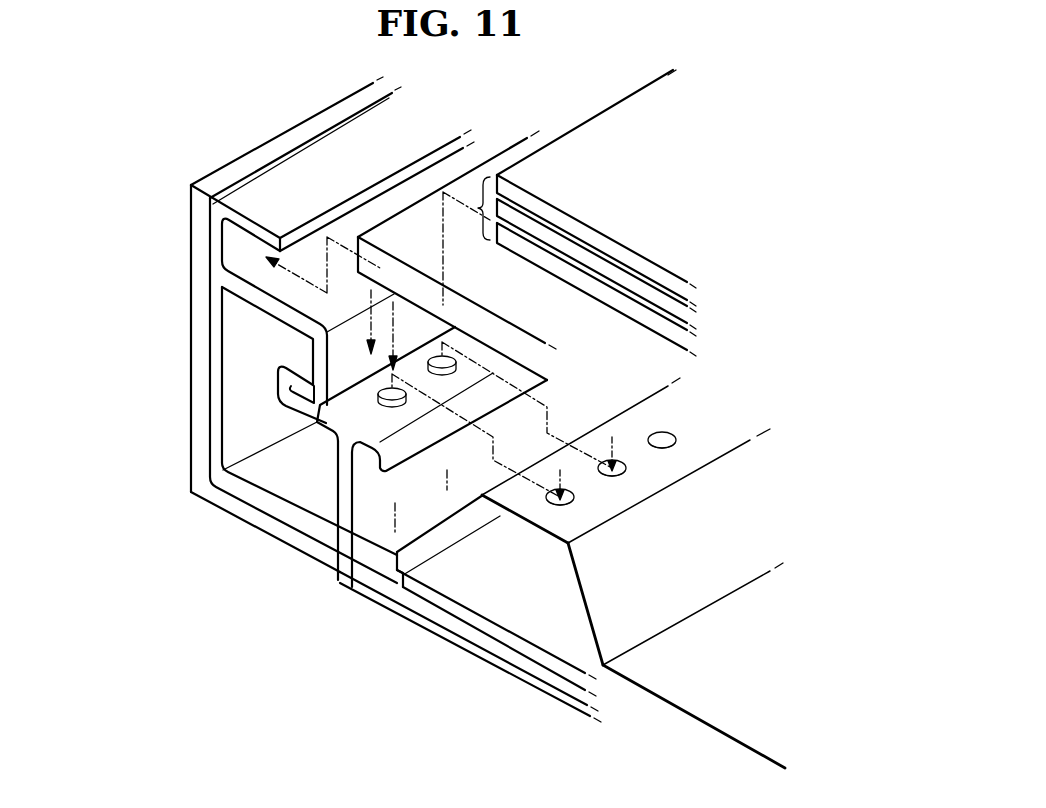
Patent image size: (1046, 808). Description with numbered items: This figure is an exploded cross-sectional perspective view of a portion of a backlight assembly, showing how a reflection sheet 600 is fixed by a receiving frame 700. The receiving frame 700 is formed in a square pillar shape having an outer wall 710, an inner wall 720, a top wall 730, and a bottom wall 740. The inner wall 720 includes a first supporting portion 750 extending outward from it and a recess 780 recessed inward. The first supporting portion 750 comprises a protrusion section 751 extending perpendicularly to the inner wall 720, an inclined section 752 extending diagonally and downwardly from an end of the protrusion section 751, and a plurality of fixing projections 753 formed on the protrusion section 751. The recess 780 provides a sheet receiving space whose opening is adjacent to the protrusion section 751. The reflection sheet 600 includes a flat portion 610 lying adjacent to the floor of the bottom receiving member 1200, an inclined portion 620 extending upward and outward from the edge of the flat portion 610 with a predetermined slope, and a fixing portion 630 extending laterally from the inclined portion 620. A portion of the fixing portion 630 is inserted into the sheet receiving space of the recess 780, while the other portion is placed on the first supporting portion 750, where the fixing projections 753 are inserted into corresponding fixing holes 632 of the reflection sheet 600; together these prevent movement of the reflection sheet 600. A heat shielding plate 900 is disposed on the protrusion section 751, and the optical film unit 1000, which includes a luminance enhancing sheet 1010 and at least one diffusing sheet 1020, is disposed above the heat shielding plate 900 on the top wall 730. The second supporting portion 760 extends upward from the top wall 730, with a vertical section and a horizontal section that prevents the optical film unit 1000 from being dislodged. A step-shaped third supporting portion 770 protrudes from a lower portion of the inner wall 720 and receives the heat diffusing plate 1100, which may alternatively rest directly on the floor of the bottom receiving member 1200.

The receiving frame 700 is at (349, 720).
The outer wall 710 is at (215, 433).
The inner wall 720 is at (322, 330).
The top wall 730 is at (260, 298).
The bottom wall 740 is at (213, 496).
The first supporting portion 750 is at (222, 589).
The protrusion section 751 is at (415, 392).
The inclined section 752 is at (355, 436).
The fixing projections 753 is at (362, 403).
The second supporting portion 760 is at (213, 241).
The third supporting portion 770 is at (399, 578).
The recess 780 is at (272, 377).
The heat shielding plate 900 is at (532, 346).
The optical film unit 1000 is at (790, 305).
The luminance enhancing sheet 1010 is at (688, 291).
The diffusing sheet 1020 is at (688, 320).
The heat diffusing plate 1100 is at (548, 651).
The bottom receiving member 1200 is at (458, 636).
The reflection sheet 600 is at (788, 588).
The flat portion 610 is at (660, 697).
The inclined portion 620 is at (607, 622).
The fixing portion 630 is at (585, 523).
The fixing holes 632 is at (630, 462).